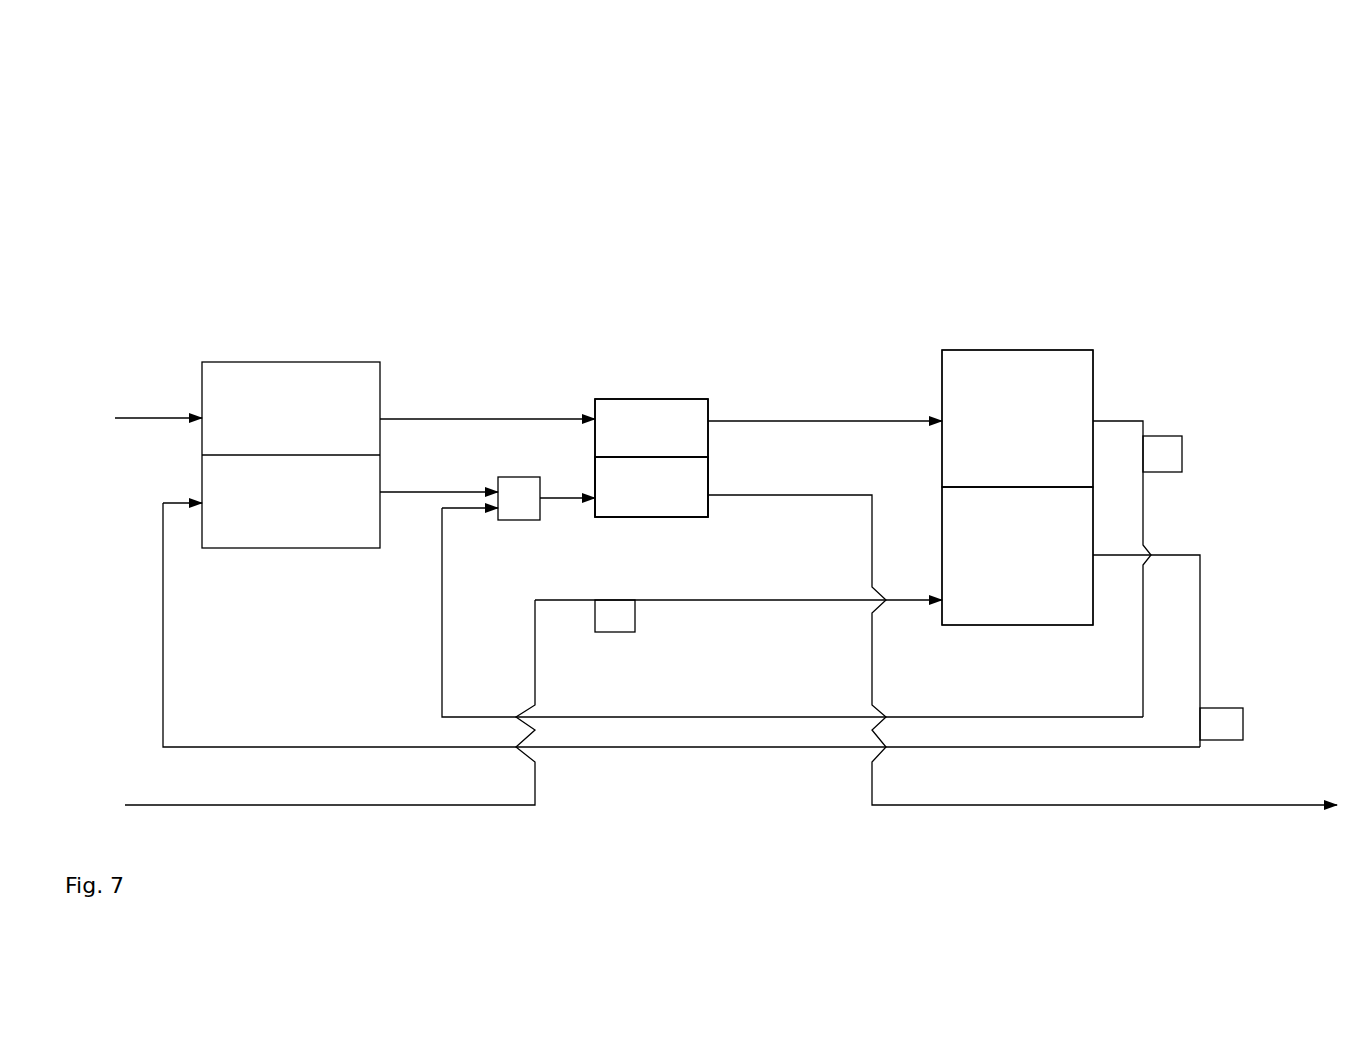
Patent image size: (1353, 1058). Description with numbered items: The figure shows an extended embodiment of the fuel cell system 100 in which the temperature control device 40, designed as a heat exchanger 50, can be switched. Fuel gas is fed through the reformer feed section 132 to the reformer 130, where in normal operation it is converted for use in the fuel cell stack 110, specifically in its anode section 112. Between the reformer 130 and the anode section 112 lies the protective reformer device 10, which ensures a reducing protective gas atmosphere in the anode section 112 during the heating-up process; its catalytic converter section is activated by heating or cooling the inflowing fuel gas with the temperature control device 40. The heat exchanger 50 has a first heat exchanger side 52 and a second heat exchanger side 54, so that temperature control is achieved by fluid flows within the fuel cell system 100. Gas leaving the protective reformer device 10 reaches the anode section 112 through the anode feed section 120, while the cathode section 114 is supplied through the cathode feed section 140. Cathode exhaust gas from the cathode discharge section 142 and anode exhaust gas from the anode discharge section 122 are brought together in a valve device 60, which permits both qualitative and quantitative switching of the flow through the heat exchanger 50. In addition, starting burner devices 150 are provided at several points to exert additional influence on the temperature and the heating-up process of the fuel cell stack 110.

The fuel cell system 100 is at (348, 150).
The reformer 130 is at (304, 335).
The reformer feed section 132 is at (165, 416).
The protective reformer device 10 is at (606, 385).
The heat exchanger 50 is at (699, 385).
The first heat exchanger side 52 is at (660, 430).
The second heat exchanger side 54 is at (644, 497).
The temperature control device 40 is at (700, 517).
The valve device 60 is at (515, 520).
The fuel cell stack 110 is at (1040, 350).
The anode section 112 is at (1037, 435).
The cathode section 114 is at (1037, 575).
The anode feed section 120 is at (850, 418).
The anode discharge section 122 is at (1115, 421).
The cathode feed section 140 is at (795, 600).
The cathode discharge section 142 is at (1200, 615).
The starting burner device 150 is at (1182, 452).